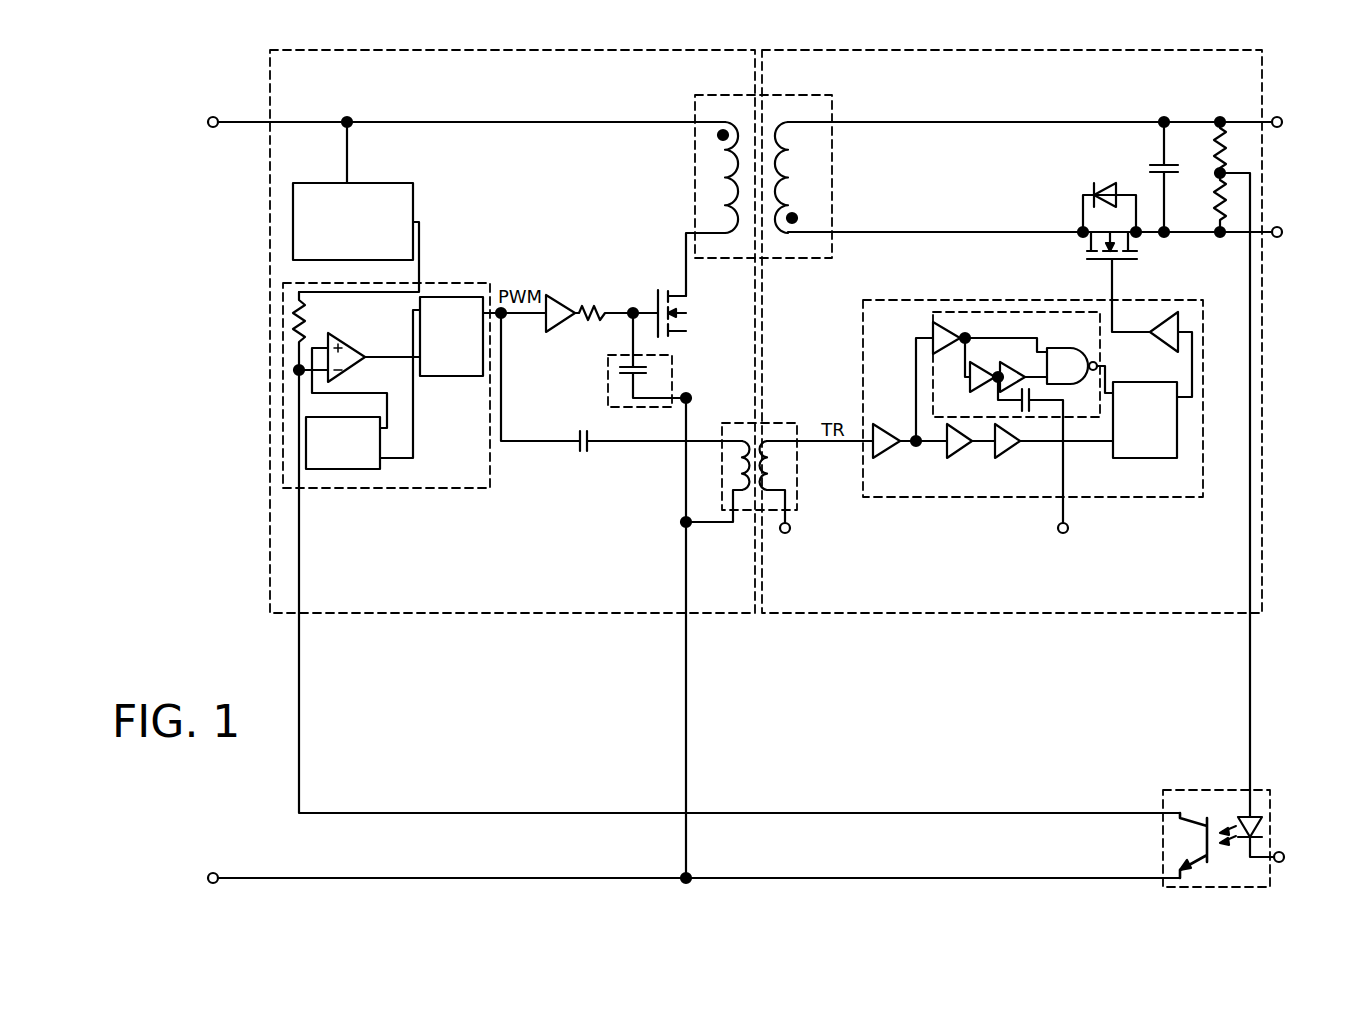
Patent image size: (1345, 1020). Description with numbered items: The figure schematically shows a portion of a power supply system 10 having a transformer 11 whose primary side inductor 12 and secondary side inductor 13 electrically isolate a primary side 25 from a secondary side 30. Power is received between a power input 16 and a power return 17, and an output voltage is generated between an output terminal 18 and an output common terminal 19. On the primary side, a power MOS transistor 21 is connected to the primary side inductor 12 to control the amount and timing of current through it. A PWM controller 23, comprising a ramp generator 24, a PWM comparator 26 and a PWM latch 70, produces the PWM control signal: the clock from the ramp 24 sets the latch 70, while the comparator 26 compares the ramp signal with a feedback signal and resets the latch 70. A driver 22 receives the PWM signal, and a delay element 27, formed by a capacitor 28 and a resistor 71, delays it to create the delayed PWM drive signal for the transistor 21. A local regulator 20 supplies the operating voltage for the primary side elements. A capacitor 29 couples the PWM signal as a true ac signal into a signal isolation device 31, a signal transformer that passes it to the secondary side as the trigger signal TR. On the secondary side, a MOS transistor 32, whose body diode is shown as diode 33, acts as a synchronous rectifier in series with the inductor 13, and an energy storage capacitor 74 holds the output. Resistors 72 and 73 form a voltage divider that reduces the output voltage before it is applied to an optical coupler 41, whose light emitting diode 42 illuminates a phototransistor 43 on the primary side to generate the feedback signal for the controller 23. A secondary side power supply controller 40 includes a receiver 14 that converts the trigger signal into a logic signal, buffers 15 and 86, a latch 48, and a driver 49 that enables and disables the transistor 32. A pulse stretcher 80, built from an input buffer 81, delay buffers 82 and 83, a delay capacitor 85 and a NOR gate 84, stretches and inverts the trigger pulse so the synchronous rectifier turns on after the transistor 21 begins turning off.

The power supply system 10 is at (820, 913).
The transformer 11 is at (738, 95).
The primary side inductor 12 is at (695, 176).
The secondary side inductor 13 is at (832, 198).
The receiver 14 is at (892, 455).
The buffer 15 is at (966, 455).
The power input 16 is at (210, 114).
The power return 17 is at (211, 870).
The output terminal 18 is at (1282, 115).
The output common terminal 19 is at (1282, 226).
The local regulator 20 is at (385, 183).
The power MOS transistor 21 is at (675, 293).
The driver 22 is at (563, 297).
The PWM controller 23 is at (360, 494).
The ramp generator 24 is at (380, 470).
The primary side 25 is at (268, 530).
The PWM comparator 26 is at (355, 346).
The delay element 27 is at (608, 392).
The capacitor 28 is at (620, 363).
The capacitor 29 is at (588, 450).
The secondary side 30 is at (908, 616).
The signal isolation device 31 is at (742, 423).
The MOS transistor 32 is at (1088, 243).
The diode 33 is at (1105, 183).
The secondary side power supply controller 40 is at (1145, 498).
The optical coupler 41 is at (1190, 790).
The light emitting diode 42 is at (1265, 828).
The phototransistor 43 is at (1193, 830).
The latch 48 is at (1137, 462).
The driver 49 is at (1162, 341).
The PWM latch 70 is at (455, 380).
The resistor 71 is at (588, 305).
The resistor 72 is at (1215, 156).
The resistor 73 is at (1215, 202).
The energy storage capacitor 74 is at (1158, 165).
The pulse stretcher 80 is at (933, 320).
The input buffer 81 is at (950, 322).
The delay buffer 82 is at (972, 380).
The delay buffer 83 is at (1013, 360).
The NOR gate 84 is at (1056, 350).
The delay capacitor 85 is at (1032, 390).
The buffer 86 is at (1014, 455).